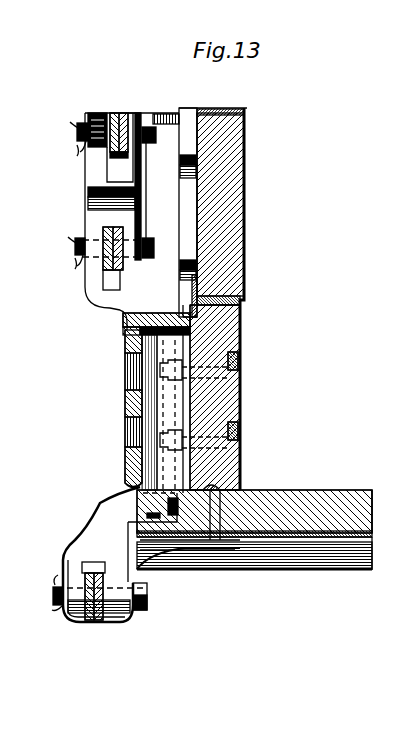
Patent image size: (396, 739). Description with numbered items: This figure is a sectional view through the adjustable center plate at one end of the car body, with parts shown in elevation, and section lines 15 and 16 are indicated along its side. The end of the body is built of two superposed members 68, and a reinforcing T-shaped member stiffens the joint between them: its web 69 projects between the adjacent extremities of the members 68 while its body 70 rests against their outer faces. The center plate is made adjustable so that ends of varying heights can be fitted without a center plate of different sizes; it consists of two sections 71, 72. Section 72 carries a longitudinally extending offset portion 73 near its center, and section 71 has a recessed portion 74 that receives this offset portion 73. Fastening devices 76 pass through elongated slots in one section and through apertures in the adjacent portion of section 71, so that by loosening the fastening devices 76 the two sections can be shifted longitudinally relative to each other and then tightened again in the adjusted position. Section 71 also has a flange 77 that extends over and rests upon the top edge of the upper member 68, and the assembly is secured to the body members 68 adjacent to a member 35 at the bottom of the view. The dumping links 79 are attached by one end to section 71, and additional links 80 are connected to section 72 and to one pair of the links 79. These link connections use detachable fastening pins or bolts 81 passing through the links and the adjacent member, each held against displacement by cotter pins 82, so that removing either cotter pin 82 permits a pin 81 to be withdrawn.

The section line 15 is at (0, 362).
The section line 16 is at (2, 458).
The base plate 35 is at (307, 507).
The member 68 is at (235, 257).
The web 69 is at (222, 298).
The body 70 is at (197, 320).
The section 71 is at (153, 113).
The section 72 is at (100, 505).
The offset portion 73 is at (116, 113).
The recessed portion 74 is at (127, 338).
The fastening devices 76 is at (245, 346).
The flange 77 is at (212, 113).
The dumping links 79 is at (103, 222).
The additional links 80 is at (91, 622).
The fastening pins or bolts 81 is at (80, 146).
The cotter pins 82 is at (80, 124).